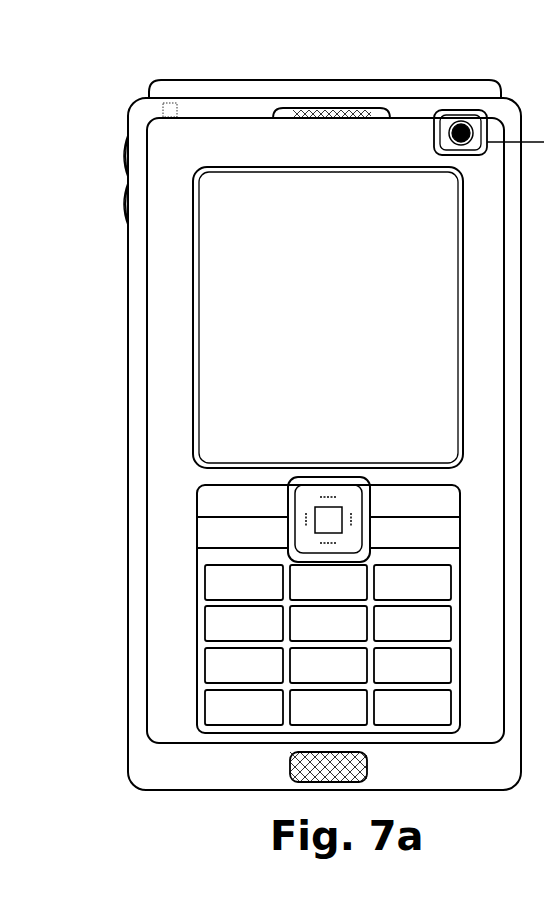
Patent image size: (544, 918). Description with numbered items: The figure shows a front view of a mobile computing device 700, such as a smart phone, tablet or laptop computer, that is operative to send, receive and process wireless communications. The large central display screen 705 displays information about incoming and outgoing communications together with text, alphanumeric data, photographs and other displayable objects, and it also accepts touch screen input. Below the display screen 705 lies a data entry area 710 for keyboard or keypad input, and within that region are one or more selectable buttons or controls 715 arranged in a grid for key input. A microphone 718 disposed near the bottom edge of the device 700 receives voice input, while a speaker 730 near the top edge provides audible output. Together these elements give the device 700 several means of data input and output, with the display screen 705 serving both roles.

The mobile computing device 700 is at (122, 105).
The display screen 705 is at (230, 302).
The data entry area 710 is at (197, 528).
The selectable buttons or controls 715 is at (218, 625).
The microphone 718 is at (293, 754).
The speaker 730 is at (365, 112).